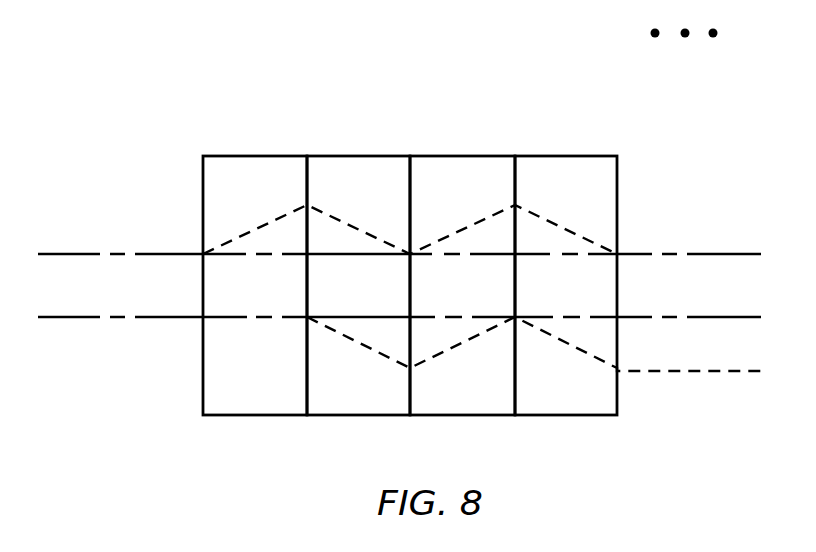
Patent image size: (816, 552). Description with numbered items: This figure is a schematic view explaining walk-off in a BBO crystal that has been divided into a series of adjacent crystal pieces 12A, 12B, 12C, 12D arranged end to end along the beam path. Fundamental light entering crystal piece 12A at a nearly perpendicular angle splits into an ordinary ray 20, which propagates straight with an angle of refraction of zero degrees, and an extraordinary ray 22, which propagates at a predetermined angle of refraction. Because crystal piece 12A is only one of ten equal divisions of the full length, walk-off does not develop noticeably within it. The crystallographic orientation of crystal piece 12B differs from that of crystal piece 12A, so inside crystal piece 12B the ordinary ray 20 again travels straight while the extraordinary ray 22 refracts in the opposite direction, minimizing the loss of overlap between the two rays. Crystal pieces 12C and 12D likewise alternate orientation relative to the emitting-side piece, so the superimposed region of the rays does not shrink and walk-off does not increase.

The crystal piece 12A is at (258, 156).
The crystal piece 12B is at (362, 156).
The crystal piece 12C is at (461, 156).
The crystal piece 12D is at (563, 156).
The ordinary ray 20 is at (78, 318).
The extraordinary ray 22 is at (245, 230).